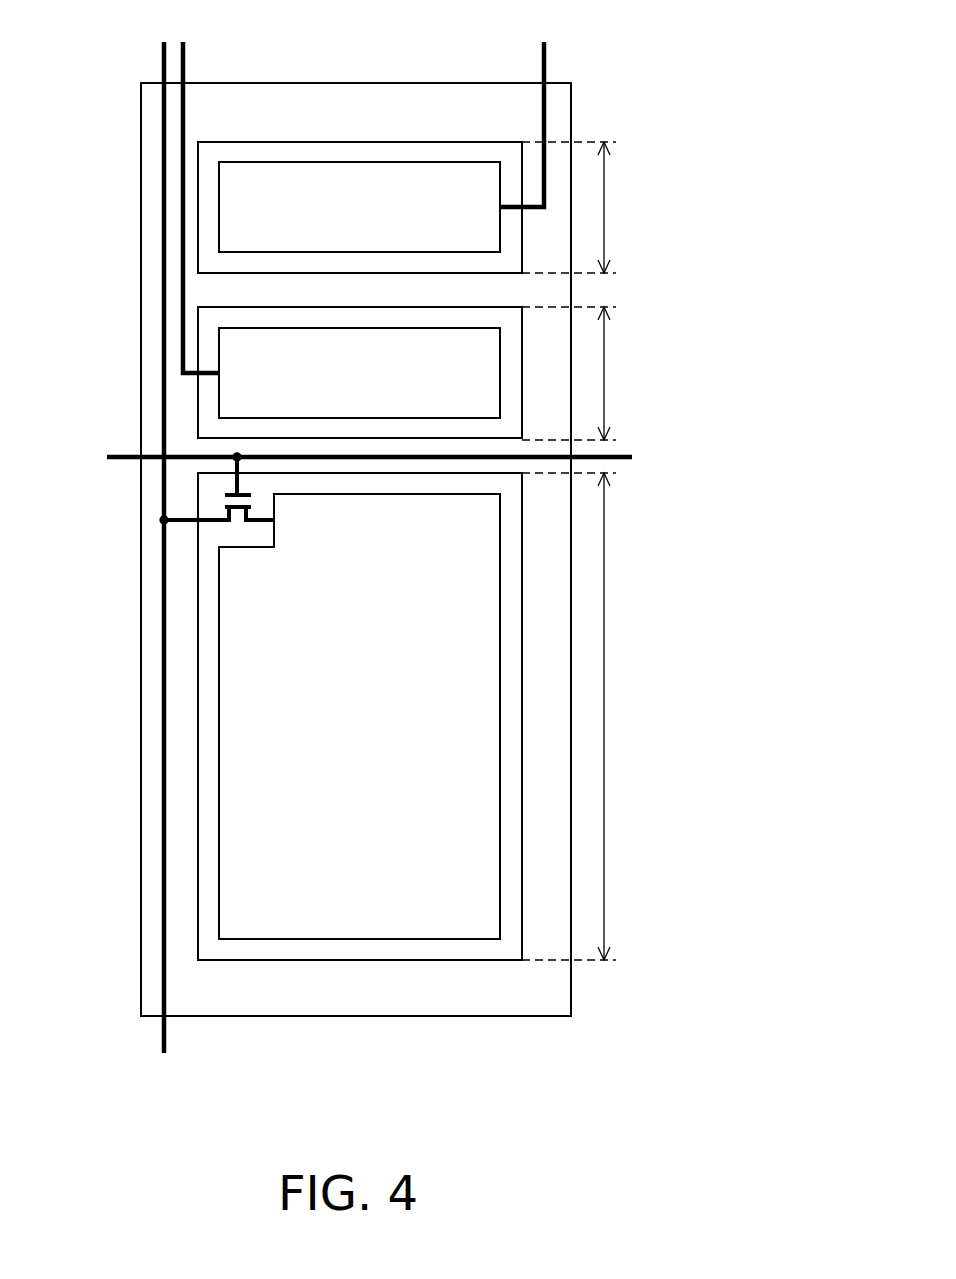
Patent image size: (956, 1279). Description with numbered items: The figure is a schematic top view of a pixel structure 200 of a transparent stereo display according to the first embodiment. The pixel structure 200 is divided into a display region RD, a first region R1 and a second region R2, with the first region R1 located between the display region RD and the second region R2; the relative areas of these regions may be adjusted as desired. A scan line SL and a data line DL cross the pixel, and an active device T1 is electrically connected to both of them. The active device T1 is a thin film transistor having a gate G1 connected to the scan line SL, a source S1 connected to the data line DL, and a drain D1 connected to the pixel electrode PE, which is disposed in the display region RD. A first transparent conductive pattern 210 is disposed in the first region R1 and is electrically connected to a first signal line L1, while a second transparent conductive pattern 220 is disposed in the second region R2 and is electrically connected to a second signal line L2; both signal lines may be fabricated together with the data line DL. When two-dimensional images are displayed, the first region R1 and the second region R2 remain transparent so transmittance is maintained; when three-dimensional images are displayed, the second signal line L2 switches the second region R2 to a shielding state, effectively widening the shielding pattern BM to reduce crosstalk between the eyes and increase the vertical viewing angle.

The pixel structure 200 is at (690, 1094).
The shielding pattern BM is at (157, 648).
The second transparent conductive pattern 220 is at (219, 217).
The first transparent conductive pattern 210 is at (220, 388).
The pixel electrode PE is at (221, 792).
The data line DL is at (154, 530).
The first signal line L1 is at (199, 190).
The second signal line L2 is at (528, 107).
The scan line SL is at (356, 457).
The active device T1 is at (155, 530).
The gate G1 is at (236, 489).
The source S1 is at (184, 523).
The drain D1 is at (257, 524).
The second region R2 is at (584, 207).
The first region R1 is at (584, 373).
The display region RD is at (585, 716).